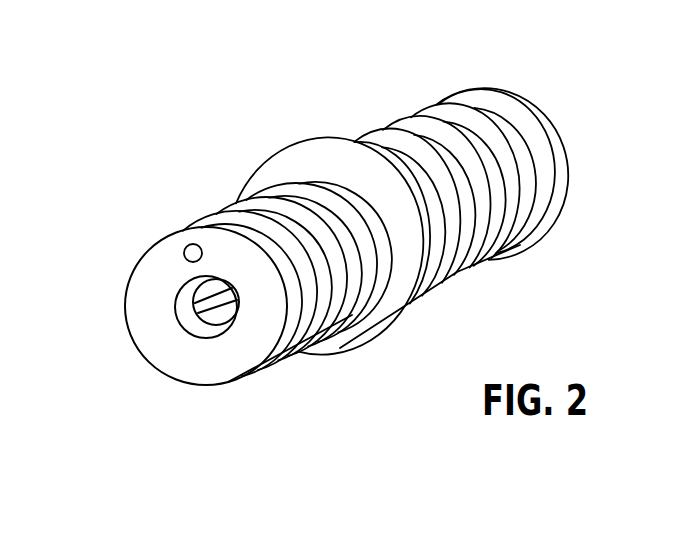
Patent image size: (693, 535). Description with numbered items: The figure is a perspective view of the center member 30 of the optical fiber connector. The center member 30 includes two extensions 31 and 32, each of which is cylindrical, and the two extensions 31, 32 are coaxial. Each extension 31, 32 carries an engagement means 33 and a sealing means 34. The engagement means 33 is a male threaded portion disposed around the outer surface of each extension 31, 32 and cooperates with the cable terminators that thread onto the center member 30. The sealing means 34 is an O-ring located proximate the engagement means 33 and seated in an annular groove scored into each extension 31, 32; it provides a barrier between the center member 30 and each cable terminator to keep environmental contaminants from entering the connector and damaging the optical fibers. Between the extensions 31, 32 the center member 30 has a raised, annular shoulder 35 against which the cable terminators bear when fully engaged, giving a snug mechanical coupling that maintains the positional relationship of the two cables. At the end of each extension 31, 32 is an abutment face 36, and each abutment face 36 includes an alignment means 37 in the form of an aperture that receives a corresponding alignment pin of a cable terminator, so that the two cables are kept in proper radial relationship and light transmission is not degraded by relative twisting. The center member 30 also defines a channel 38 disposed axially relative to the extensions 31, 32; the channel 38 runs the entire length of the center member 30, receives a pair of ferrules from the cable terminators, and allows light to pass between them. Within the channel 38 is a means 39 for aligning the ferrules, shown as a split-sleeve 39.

The center member 30 is at (616, 81).
The extension 31 is at (174, 295).
The extension 32 is at (390, 101).
The engagement means 33 is at (294, 351).
The sealing means 34 is at (346, 314).
The shoulder 35 is at (281, 132).
The abutment face 36 is at (174, 327).
The alignment means 37 is at (184, 254).
The channel 38 is at (184, 331).
The alignment means 39 is at (176, 301).